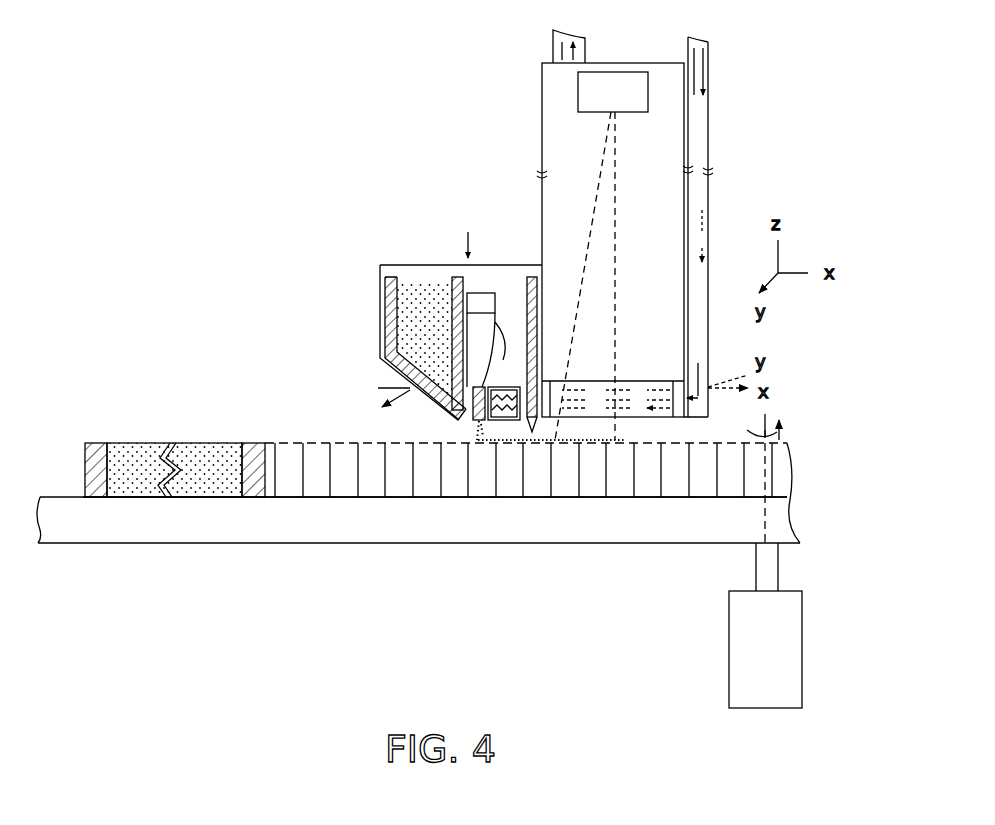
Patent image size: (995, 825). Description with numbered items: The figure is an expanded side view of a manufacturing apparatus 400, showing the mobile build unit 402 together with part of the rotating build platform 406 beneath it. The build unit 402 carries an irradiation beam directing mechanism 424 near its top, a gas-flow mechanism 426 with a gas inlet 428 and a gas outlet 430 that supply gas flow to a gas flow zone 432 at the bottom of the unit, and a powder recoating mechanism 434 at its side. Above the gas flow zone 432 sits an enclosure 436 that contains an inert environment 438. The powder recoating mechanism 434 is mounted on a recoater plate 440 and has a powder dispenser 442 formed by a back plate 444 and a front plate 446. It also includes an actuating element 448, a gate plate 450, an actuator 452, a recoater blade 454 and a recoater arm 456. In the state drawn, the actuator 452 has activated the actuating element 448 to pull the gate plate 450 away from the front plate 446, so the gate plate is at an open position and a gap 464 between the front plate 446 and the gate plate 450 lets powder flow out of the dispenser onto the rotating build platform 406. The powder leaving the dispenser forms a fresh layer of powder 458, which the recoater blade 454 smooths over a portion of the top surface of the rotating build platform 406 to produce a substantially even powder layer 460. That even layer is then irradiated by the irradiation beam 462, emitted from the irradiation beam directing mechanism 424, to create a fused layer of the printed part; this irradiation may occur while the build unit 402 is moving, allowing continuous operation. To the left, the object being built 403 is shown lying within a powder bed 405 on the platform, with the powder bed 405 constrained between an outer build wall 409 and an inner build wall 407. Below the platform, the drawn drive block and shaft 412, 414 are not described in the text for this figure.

The manufacturing apparatus 400 is at (300, 122).
The build unit 402 is at (503, 55).
The object being built 403 is at (178, 440).
The powder bed 405 is at (218, 440).
The rotating build platform 406 is at (178, 535).
The inner build wall 407 is at (258, 440).
The outer build wall 409 is at (94, 440).
The actuator 412 is at (790, 666).
The shaft 414 is at (775, 575).
The irradiation beam directing mechanism 424 is at (605, 83).
The gas-flow mechanism 426 is at (700, 141).
The gas inlet 428 is at (676, 380).
The gas outlet 430 is at (546, 378).
The gas flow zone 432 is at (630, 390).
The powder recoating mechanism 434 is at (535, 200).
The enclosure 436 is at (541, 113).
The inert environment 438 is at (554, 148).
The recoater plate 440 is at (380, 299).
The powder dispenser 442 is at (452, 258).
The back plate 444 is at (388, 280).
The front plate 446 is at (467, 295).
The actuating element 448 is at (507, 354).
The gate plate 450 is at (482, 387).
The actuator 452 is at (505, 421).
The recoater blade 454 is at (533, 433).
The recoater arm 456 is at (530, 277).
The fresh layer of powder 458 is at (455, 432).
The substantially even powder layer 460 is at (680, 445).
The irradiation beam 462 is at (621, 223).
The gap 464 is at (469, 421).